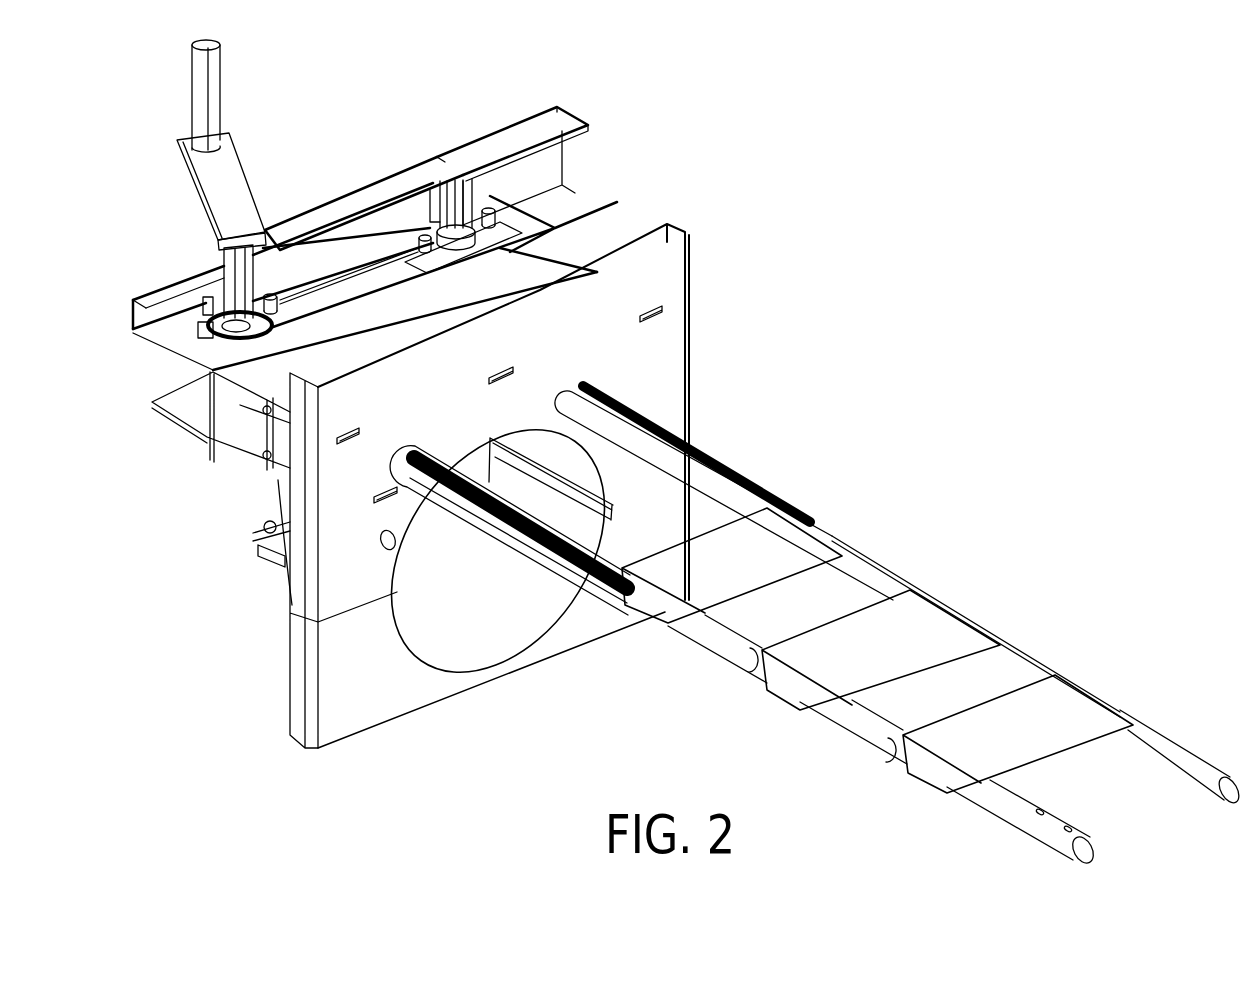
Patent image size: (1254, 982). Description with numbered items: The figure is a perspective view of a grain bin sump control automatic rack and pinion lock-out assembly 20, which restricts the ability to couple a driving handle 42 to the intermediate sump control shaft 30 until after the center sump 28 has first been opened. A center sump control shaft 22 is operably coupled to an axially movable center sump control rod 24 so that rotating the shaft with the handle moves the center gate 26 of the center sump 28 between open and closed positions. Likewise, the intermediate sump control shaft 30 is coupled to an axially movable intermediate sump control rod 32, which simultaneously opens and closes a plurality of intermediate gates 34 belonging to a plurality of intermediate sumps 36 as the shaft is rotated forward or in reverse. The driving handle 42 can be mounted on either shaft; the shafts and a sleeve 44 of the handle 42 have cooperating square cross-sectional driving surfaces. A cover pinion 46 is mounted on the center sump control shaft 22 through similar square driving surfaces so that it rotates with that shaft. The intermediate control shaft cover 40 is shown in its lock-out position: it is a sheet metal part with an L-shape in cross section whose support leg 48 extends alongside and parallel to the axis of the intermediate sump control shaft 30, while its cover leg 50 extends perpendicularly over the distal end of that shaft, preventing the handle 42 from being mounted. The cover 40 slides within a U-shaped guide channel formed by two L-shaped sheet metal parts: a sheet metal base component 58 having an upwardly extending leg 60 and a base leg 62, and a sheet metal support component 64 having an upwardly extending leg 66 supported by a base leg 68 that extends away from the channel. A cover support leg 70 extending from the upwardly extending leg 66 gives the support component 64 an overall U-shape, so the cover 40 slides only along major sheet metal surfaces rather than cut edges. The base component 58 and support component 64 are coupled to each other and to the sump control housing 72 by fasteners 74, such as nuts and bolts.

The grain bin sump control automatic rack and pinion lock-out assembly 20 is at (378, 68).
The center sump control shaft 22 is at (137, 336).
The center sump control rod 24 is at (547, 540).
The center gate 26 is at (1100, 696).
The center sump 28 is at (932, 770).
The intermediate sump control shaft 30 is at (463, 193).
The intermediate sump control rod 32 is at (750, 493).
The intermediate gate 34 is at (817, 527).
The intermediate sump 36 is at (662, 613).
The intermediate control shaft cover 40 is at (537, 112).
The driving handle 42 is at (255, 160).
The sleeve 44 is at (222, 253).
The cover pinion 46 is at (200, 372).
The support leg 48 is at (550, 168).
The cover leg 50 is at (565, 120).
The sheet metal base component 58 is at (170, 290).
The upwardly extending leg 60 is at (147, 313).
The base leg 62 is at (177, 345).
The sheet metal support component 64 is at (412, 160).
The upwardly extending leg 66 is at (357, 242).
The base leg 68 is at (347, 287).
The cover support leg 70 is at (400, 180).
The sump control housing 72 is at (555, 267).
The fasteners 74 is at (418, 246).